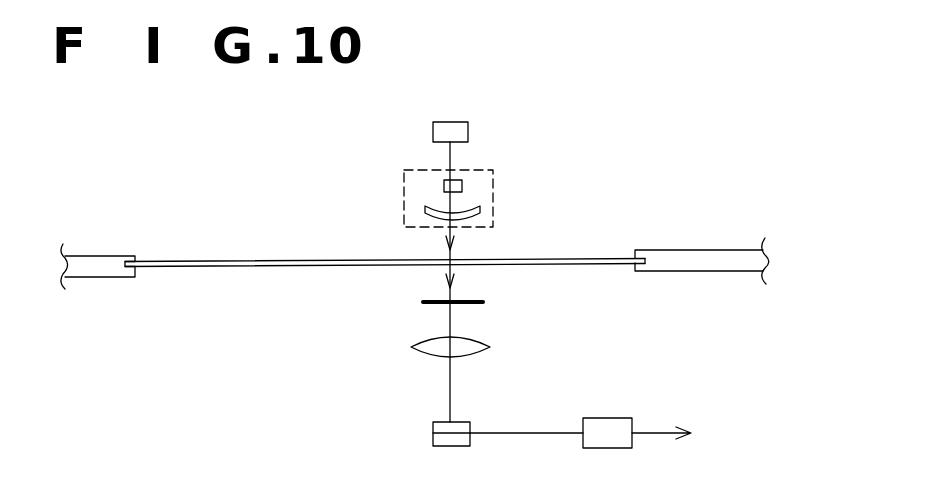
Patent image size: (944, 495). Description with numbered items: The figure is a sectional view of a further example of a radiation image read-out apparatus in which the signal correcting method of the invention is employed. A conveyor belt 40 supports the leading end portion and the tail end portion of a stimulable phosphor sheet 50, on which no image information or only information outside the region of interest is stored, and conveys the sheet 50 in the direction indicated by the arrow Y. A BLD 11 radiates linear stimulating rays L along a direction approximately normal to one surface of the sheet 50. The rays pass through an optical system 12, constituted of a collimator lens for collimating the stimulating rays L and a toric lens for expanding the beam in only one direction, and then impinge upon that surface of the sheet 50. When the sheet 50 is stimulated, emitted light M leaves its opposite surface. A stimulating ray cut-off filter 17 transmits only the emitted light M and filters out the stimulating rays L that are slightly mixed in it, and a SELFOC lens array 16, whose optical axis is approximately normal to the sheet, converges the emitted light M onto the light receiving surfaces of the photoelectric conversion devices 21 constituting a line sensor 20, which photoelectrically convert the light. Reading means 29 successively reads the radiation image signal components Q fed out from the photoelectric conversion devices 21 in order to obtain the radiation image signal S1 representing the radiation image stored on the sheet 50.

The BLD 11 is at (469, 132).
The optical system 12 is at (494, 186).
The stimulable phosphor sheet 50 is at (575, 257).
The conveyor belt 40 is at (101, 271).
The stimulating ray cut-off filter 17 is at (484, 301).
The SELFOC lens array 16 is at (491, 347).
The line sensor 20 is at (422, 446).
The photoelectric conversion device 21 is at (469, 423).
The reading means 29 is at (551, 433).
The conveyance direction arrow Y is at (155, 239).
The linear stimulating rays L is at (446, 252).
The emitted light M is at (450, 322).
The radiation image signal component Q is at (517, 437).
The radiation image signal S1 is at (661, 421).